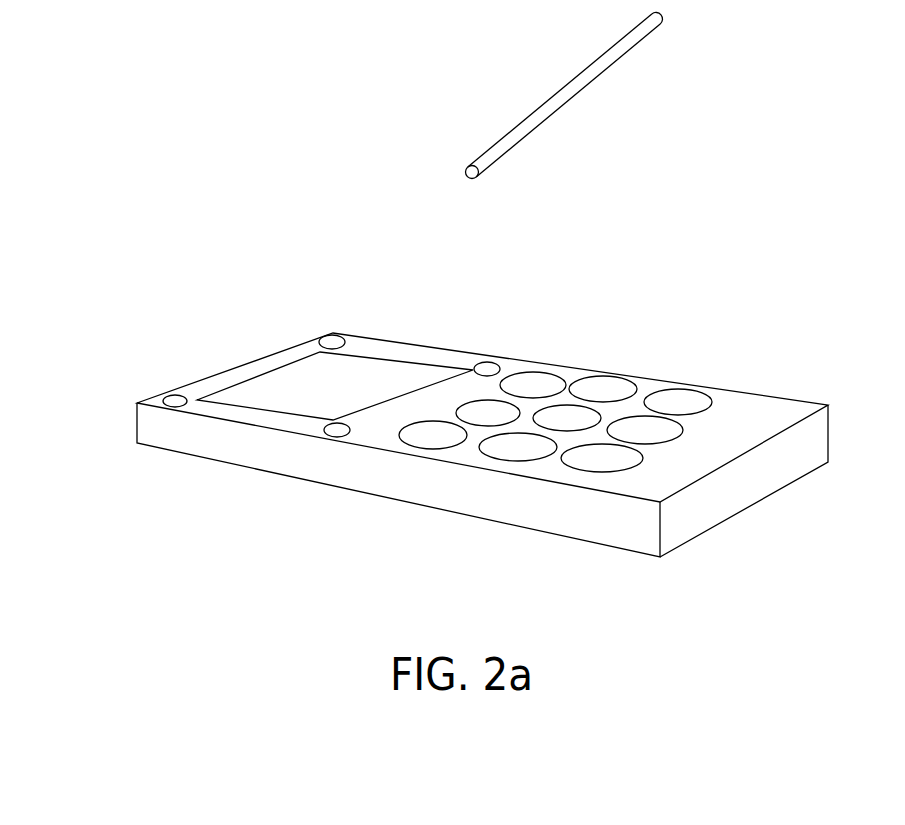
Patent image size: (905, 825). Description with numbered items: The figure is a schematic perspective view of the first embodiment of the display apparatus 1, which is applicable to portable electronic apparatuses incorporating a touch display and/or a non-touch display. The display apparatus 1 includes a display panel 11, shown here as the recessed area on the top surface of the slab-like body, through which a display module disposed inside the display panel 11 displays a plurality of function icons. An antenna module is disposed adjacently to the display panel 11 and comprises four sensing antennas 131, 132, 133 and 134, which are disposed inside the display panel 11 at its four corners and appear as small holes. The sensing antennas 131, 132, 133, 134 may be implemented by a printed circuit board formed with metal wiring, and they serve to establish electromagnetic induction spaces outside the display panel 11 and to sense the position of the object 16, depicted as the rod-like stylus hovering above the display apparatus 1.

The display apparatus 1 is at (705, 508).
The display panel 11 is at (305, 403).
The sensing antenna 131 is at (333, 340).
The sensing antenna 132 is at (486, 367).
The sensing antenna 133 is at (330, 429).
The sensing antenna 134 is at (173, 402).
The object 16 is at (593, 68).